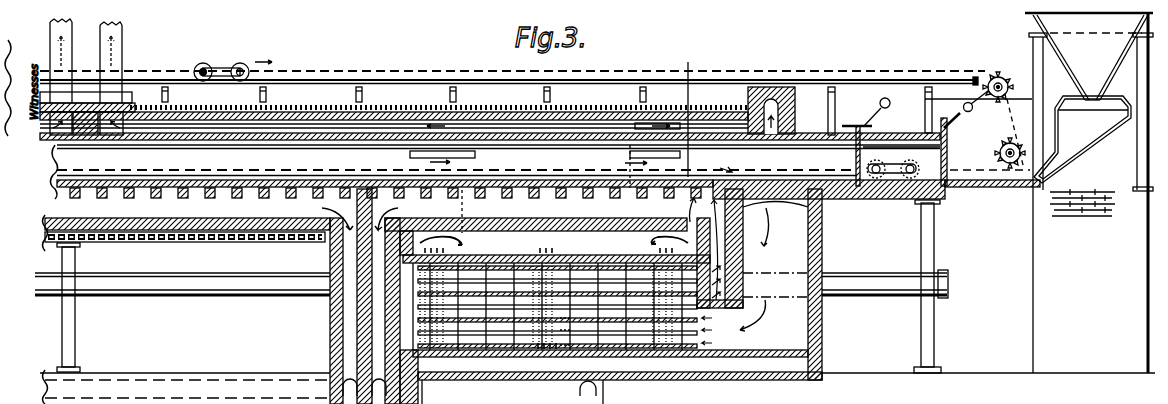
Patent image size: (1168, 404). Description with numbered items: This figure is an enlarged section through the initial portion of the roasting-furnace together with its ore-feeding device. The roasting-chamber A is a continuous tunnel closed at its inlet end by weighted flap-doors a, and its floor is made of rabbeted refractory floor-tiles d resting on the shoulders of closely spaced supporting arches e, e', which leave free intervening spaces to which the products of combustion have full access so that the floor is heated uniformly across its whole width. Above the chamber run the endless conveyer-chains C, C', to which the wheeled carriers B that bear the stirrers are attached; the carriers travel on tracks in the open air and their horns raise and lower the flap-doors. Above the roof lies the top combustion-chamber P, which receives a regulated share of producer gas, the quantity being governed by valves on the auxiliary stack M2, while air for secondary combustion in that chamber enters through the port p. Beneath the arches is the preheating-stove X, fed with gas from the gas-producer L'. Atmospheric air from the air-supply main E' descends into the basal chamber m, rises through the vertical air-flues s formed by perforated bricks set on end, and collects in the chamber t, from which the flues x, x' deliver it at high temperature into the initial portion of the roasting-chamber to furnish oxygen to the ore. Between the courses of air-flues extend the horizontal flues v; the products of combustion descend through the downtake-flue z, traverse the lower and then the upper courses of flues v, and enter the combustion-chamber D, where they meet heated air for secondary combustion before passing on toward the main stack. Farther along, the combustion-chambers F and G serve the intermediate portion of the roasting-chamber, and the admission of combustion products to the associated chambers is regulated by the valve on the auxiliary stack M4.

The endless conveyer-chain C is at (512, 135).
The endless conveyer-chain C' is at (490, 148).
The flue x' is at (447, 157).
The roasting-chamber A is at (55, 163).
The floor-tiles d is at (531, 206).
The top combustion-chamber P is at (700, 62).
The port p is at (790, 112).
The auxiliary stack M4 is at (70, 36).
The auxiliary stack M2 is at (115, 46).
The combustion-chamber G is at (46, 122).
The wheeled carrier B is at (905, 177).
The weighted flap-door a is at (932, 129).
The gas-producer L' is at (988, 193).
The combustion-chamber F is at (185, 301).
The supporting arch e' is at (185, 220).
The air-supply main E' is at (474, 286).
The supporting arch e is at (350, 296).
The combustion-chamber D is at (547, 254).
The flue x is at (556, 248).
The air-flue s is at (677, 382).
The chamber t is at (547, 293).
The horizontal flue v is at (495, 382).
The downtake-flue z is at (759, 284).
The basal chamber m is at (611, 377).
The preheating-stove X is at (635, 340).